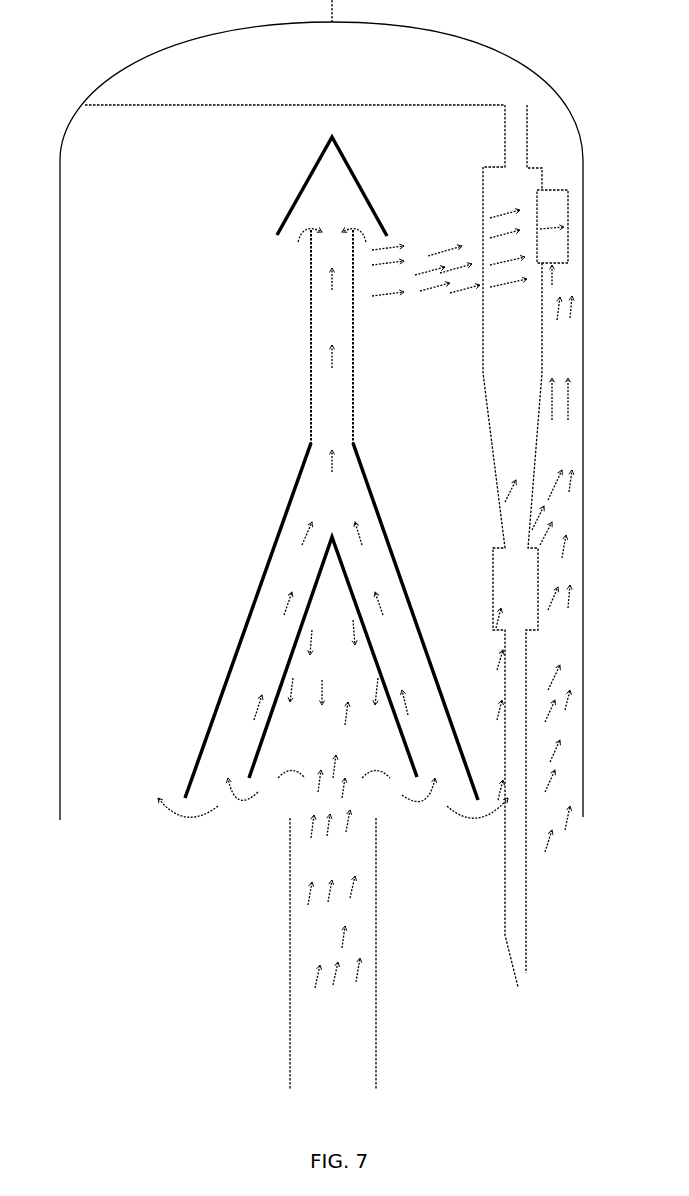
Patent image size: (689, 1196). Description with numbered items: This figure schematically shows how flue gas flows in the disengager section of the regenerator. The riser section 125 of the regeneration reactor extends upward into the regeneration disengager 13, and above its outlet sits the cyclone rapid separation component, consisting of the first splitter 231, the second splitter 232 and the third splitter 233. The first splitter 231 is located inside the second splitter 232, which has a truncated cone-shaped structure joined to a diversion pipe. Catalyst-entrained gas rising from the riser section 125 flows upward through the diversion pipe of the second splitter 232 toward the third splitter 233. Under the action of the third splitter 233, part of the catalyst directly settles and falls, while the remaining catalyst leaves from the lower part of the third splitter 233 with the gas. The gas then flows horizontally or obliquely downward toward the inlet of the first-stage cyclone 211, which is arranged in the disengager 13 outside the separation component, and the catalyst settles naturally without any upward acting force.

The regeneration disengager 13 is at (138, 222).
The riser section 125 is at (306, 948).
The first-stage cyclone 211 is at (520, 370).
The first splitter 231 is at (302, 622).
The second splitter 232 is at (310, 345).
The third splitter 233 is at (305, 185).